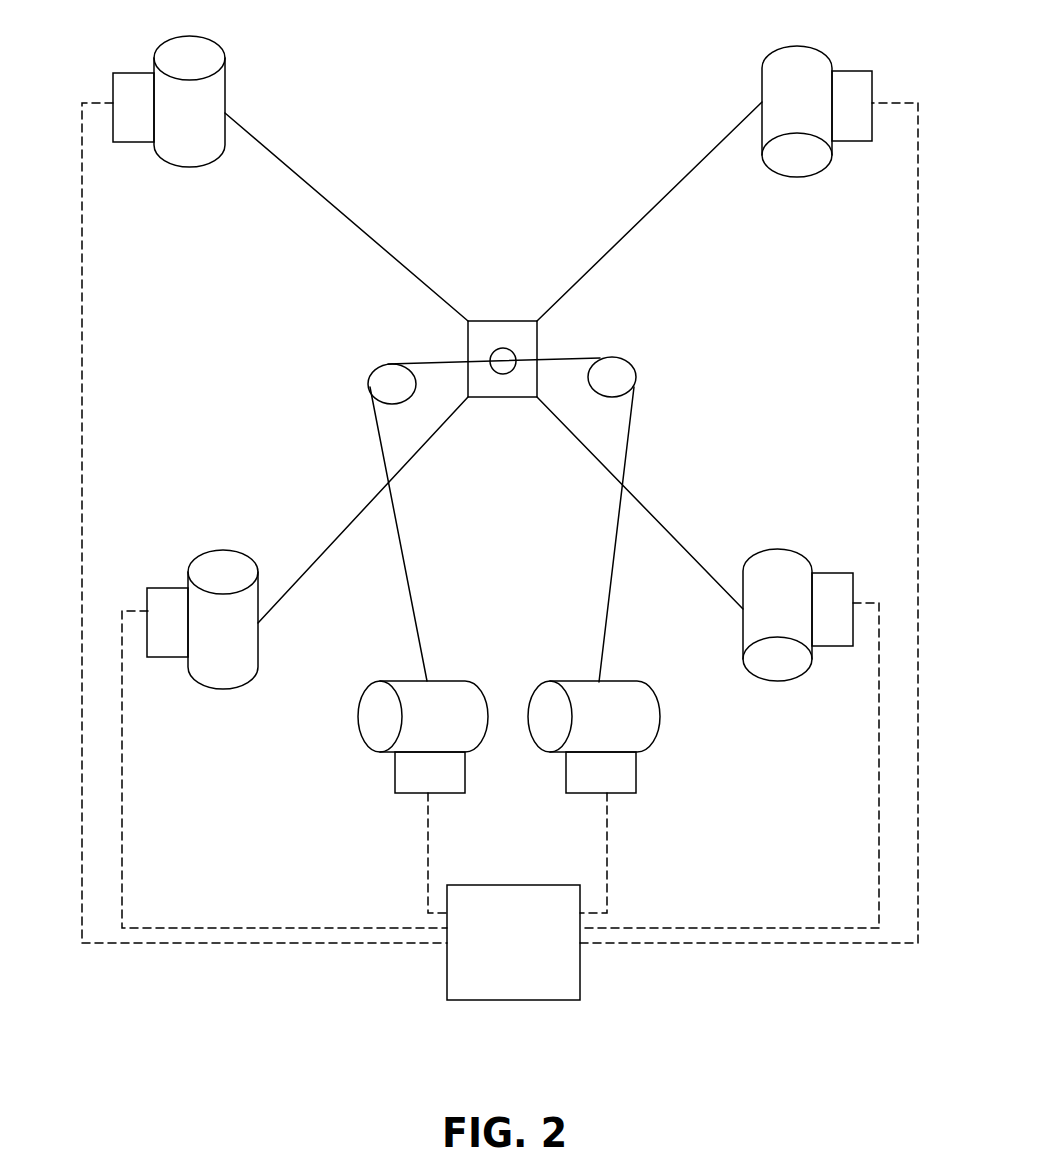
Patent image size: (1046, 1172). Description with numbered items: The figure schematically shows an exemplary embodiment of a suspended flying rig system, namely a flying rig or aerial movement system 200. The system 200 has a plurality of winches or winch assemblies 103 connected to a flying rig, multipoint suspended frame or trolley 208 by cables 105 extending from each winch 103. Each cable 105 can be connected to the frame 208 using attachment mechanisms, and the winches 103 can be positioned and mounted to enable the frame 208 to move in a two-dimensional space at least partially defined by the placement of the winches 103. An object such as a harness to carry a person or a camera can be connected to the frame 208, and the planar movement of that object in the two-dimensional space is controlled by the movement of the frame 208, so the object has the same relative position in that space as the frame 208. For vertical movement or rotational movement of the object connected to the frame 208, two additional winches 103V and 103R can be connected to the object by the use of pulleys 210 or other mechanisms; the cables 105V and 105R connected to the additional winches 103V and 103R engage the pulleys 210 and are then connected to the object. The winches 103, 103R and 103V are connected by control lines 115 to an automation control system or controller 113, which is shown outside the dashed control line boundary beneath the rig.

The winch assembly 103 is at (225, 77).
The cable 105 is at (300, 173).
The additional winch 103R is at (375, 713).
The additional winch 103V is at (660, 718).
The cable 105R is at (417, 628).
The cable 105V is at (603, 643).
The automation control system or controller 113 is at (580, 980).
The control line 115 is at (83, 257).
The flying rig or aerial movement system 200 is at (750, 1015).
The flying rig, multipoint suspended frame or trolley 208 is at (537, 332).
The pulley 210 is at (388, 382).